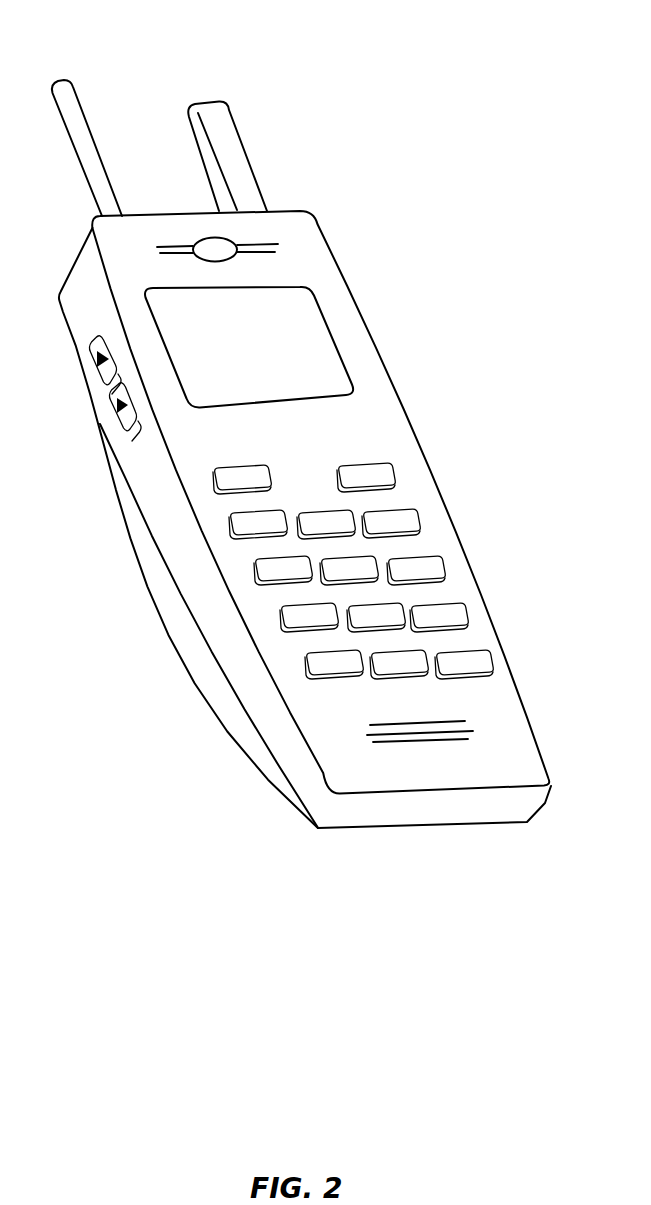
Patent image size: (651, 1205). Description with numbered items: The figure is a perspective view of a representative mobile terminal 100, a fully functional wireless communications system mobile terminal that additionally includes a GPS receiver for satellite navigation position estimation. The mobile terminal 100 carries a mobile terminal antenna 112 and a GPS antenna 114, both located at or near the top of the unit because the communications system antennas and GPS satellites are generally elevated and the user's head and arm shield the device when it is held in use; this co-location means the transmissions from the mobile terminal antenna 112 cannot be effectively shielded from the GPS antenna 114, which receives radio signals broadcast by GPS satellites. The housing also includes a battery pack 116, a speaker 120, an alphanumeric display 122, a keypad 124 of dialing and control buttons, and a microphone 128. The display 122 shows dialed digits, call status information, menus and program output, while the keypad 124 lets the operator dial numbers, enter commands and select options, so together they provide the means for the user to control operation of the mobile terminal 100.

The mobile terminal 100 is at (468, 109).
The mobile terminal antenna 112 is at (67, 102).
The GPS antenna 114 is at (228, 145).
The battery pack 116 is at (250, 735).
The speaker 120 is at (240, 243).
The display 122 is at (305, 347).
The keypad 124 is at (388, 550).
The microphone 128 is at (470, 740).